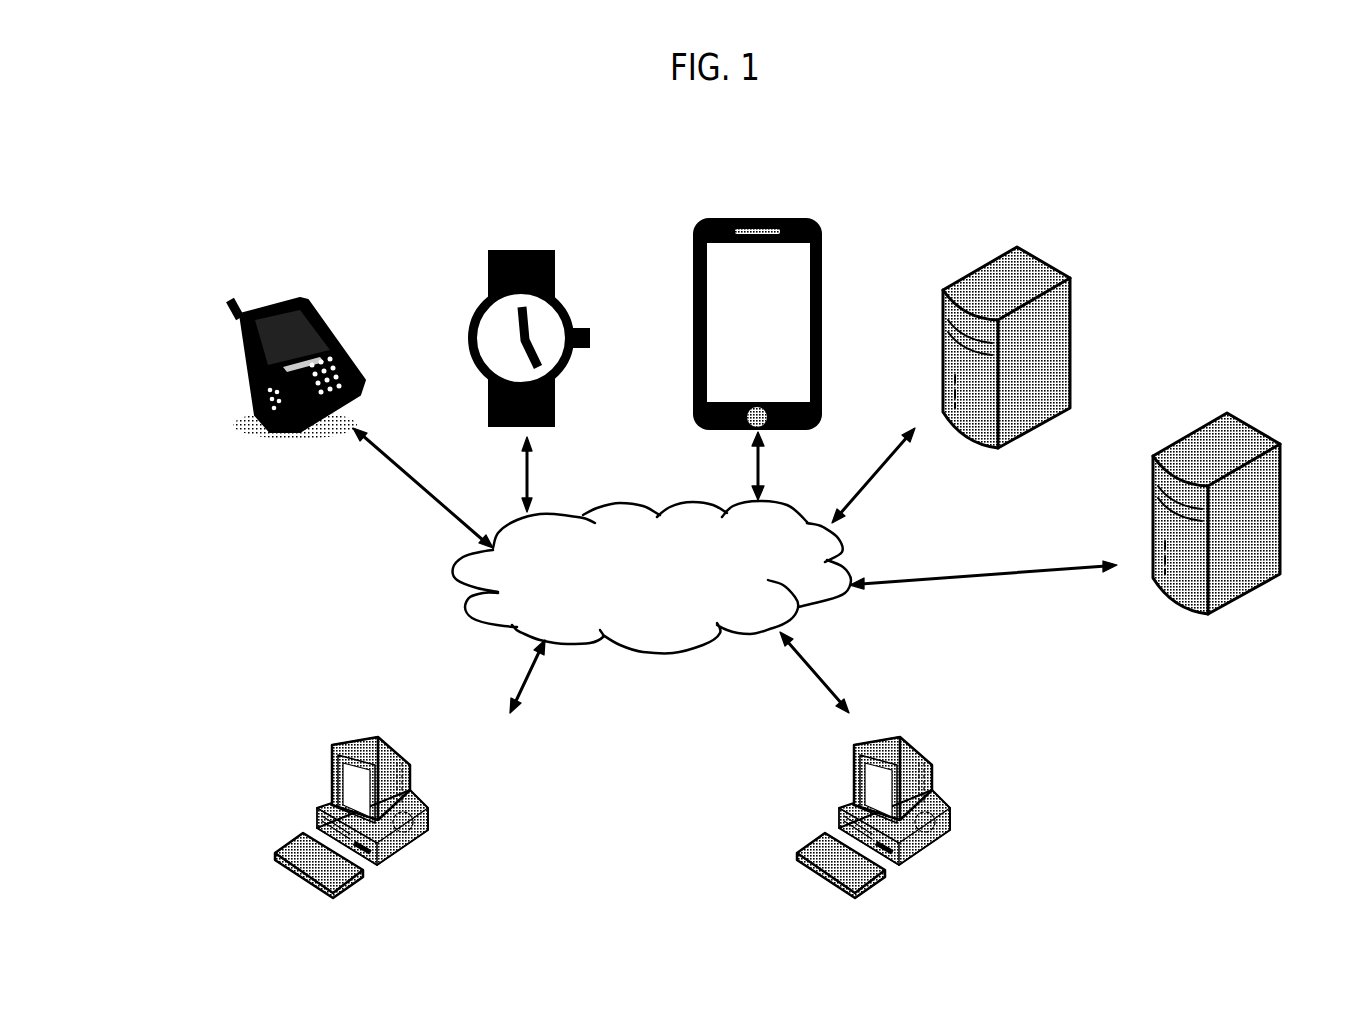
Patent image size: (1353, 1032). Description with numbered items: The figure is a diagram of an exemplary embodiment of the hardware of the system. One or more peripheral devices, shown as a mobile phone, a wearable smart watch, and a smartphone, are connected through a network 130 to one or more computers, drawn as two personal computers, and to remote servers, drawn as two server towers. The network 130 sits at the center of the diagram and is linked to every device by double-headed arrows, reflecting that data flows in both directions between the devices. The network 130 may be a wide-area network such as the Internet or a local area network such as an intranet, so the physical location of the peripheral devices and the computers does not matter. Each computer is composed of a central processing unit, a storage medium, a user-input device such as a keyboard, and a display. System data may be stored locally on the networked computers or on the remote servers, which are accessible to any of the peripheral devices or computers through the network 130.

The network 130 is at (652, 577).